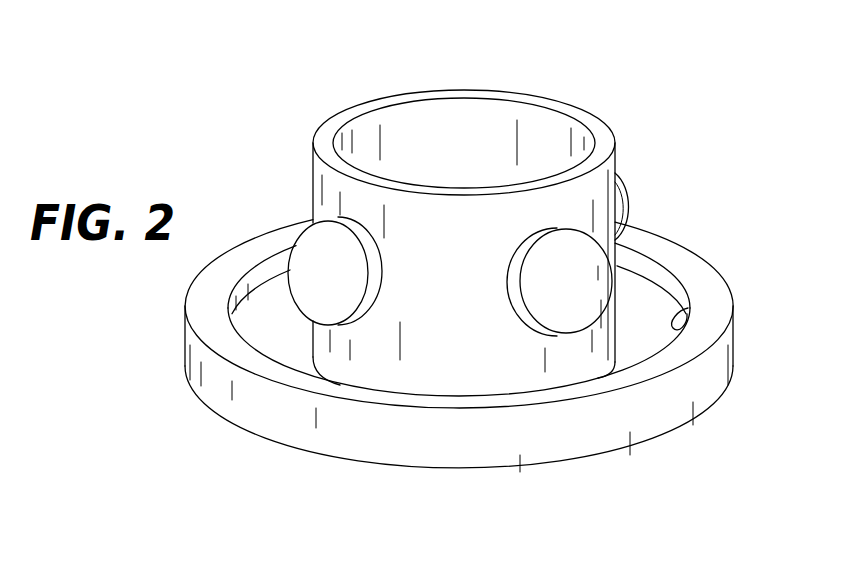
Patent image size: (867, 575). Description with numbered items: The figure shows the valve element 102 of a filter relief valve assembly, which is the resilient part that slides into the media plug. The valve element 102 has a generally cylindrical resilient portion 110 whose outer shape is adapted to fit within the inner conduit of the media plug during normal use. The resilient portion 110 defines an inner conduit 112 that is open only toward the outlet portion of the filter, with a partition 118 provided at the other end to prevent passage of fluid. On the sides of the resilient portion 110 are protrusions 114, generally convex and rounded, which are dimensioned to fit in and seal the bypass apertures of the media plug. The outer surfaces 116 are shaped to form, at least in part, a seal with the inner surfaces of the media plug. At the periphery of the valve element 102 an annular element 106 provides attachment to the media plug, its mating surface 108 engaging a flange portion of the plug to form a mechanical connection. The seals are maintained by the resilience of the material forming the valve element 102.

The valve element 102 is at (494, 293).
The annular element 106 is at (494, 393).
The mating surface 108 is at (693, 309).
The generally cylindrical resilient portion 110 is at (414, 287).
The inner conduit 112 is at (463, 148).
The protrusions 114 is at (567, 267).
The outer surfaces 116 is at (445, 345).
The partition 118 is at (548, 465).